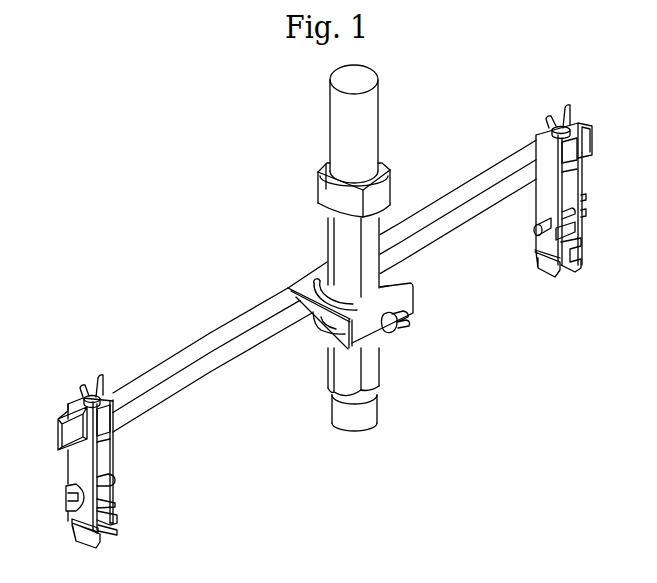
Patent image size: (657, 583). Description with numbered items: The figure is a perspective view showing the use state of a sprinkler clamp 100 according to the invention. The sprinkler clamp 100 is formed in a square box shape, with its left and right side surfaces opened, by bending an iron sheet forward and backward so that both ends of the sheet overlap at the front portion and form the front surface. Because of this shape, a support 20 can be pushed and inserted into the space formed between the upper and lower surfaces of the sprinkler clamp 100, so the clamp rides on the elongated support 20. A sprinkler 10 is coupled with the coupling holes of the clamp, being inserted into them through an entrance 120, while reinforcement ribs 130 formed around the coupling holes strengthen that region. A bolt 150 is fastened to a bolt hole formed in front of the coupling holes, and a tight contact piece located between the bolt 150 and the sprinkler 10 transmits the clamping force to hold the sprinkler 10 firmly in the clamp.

The sprinkler 10 is at (354, 420).
The support 20 is at (185, 355).
The sprinkler clamp 100 is at (290, 283).
The entrance 120 is at (388, 283).
The reinforcement ribs 130 is at (322, 279).
The bolt 150 is at (407, 329).